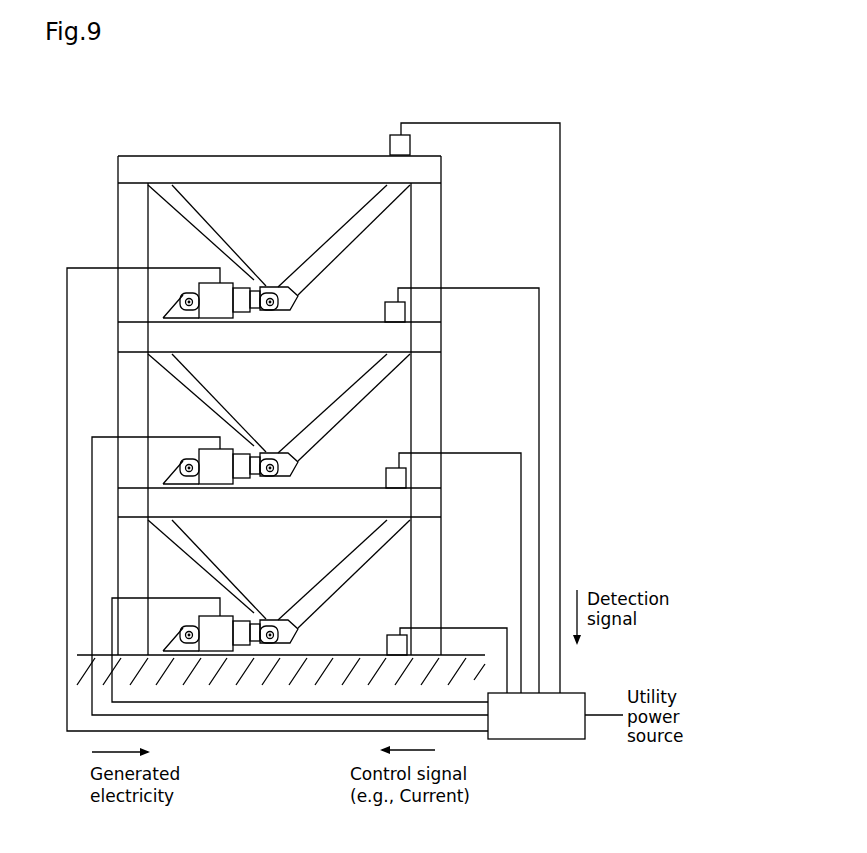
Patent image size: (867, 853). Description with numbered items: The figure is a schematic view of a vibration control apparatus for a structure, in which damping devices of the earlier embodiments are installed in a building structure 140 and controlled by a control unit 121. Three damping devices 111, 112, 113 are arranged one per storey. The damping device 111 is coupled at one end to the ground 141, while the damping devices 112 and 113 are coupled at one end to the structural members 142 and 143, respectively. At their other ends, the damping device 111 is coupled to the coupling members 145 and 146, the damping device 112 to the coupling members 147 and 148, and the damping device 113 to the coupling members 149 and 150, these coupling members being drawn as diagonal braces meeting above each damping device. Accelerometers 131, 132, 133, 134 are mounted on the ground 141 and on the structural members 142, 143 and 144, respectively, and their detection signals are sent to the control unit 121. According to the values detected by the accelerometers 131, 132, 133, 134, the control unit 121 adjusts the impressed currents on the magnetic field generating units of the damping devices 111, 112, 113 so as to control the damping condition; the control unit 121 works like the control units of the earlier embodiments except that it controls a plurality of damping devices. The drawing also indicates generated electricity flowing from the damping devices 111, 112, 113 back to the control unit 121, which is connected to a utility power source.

The damping device 111 is at (248, 612).
The damping device 112 is at (249, 442).
The damping device 113 is at (247, 272).
The control unit 121 is at (540, 739).
The accelerometer 131 is at (407, 645).
The accelerometer 132 is at (400, 479).
The accelerometer 133 is at (405, 312).
The accelerometer 134 is at (410, 146).
The building structure 140 is at (290, 142).
The ground 141 is at (355, 654).
The structural member 142 is at (352, 487).
The structural member 143 is at (347, 321).
The structural member 144 is at (354, 156).
The coupling member 145 is at (237, 578).
The coupling member 146 is at (348, 558).
The coupling member 147 is at (234, 405).
The coupling member 148 is at (325, 400).
The coupling member 149 is at (224, 240).
The coupling member 150 is at (335, 228).